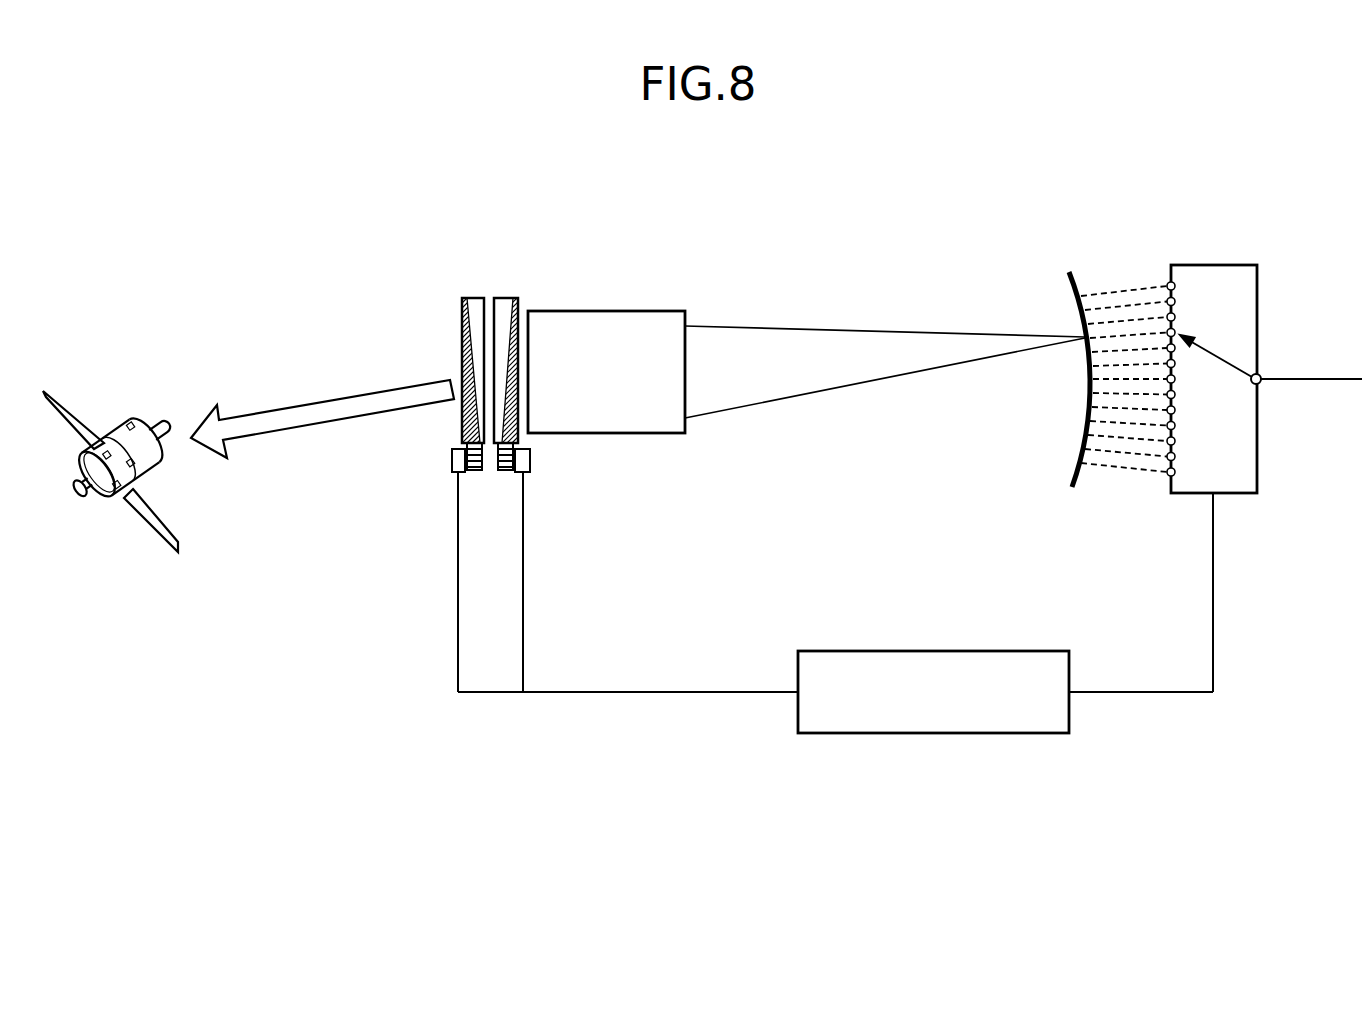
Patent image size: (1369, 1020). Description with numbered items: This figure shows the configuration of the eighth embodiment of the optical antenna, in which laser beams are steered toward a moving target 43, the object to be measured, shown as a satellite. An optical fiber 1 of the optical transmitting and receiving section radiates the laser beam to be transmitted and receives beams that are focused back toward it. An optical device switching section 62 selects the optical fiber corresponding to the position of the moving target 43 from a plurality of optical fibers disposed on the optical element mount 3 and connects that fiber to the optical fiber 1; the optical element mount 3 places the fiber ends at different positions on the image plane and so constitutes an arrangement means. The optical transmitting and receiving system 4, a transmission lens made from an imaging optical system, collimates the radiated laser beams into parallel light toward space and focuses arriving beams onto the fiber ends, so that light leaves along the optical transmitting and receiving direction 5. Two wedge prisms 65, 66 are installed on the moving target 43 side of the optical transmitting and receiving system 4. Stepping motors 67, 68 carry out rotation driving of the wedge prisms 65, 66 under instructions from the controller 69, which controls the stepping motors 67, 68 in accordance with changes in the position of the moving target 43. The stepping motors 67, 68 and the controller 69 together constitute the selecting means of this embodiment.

The optical fiber 1 is at (1322, 355).
The optical element mount 3 is at (1069, 272).
The optical transmitting and receiving system 4 is at (633, 311).
The optical transmitting and receiving direction 5 is at (322, 399).
The moving target 43 is at (62, 391).
The optical device switching section 62 is at (1223, 265).
The wedge prism 65 is at (478, 297).
The wedge prism 66 is at (500, 297).
The stepping motor 67 is at (452, 461).
The stepping motor 68 is at (530, 459).
The controller 69 is at (963, 651).